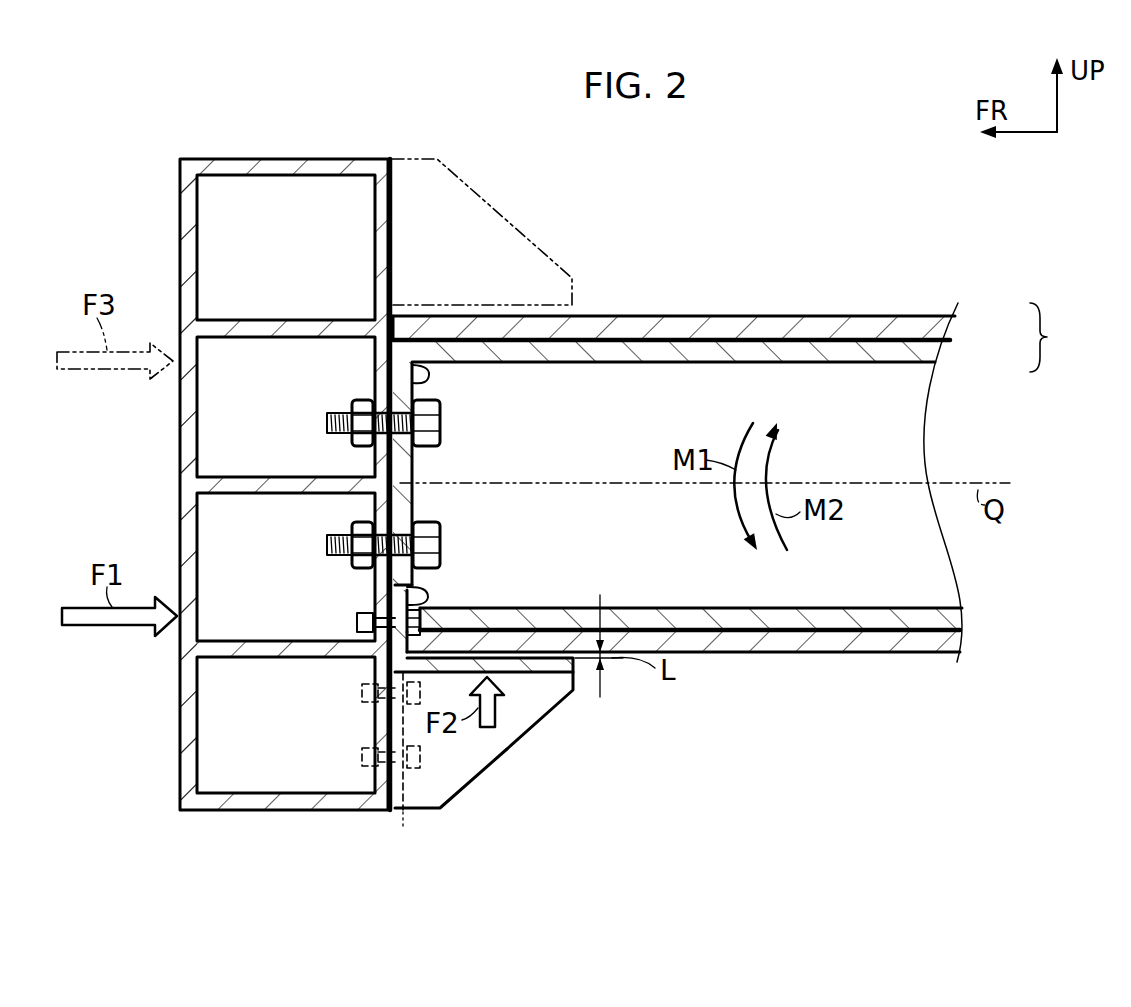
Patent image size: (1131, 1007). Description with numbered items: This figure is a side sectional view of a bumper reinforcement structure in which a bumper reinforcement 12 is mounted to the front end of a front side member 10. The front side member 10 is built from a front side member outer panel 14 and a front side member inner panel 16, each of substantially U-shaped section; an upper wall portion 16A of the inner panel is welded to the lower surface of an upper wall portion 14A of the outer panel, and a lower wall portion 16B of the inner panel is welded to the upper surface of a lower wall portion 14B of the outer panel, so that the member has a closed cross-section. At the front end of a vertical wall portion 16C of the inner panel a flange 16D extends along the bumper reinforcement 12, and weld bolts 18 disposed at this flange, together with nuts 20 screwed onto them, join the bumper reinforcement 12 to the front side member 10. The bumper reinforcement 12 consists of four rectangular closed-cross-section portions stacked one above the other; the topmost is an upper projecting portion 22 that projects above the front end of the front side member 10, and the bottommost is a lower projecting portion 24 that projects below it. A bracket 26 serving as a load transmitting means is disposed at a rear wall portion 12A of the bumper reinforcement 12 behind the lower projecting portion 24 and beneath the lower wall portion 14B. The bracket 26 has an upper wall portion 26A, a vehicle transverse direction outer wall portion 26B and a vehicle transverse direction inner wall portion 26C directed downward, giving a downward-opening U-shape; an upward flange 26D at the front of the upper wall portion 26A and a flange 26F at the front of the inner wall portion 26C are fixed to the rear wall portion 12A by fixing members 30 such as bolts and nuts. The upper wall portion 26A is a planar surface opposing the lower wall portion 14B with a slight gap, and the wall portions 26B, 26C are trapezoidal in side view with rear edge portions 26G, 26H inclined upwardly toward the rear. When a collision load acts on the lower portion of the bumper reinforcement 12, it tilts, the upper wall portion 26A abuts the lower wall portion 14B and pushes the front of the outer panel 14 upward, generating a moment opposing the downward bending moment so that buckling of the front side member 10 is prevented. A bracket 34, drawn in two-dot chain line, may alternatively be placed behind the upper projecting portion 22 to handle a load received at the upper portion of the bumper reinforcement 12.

The front side member 10 is at (739, 479).
The bumper reinforcement 12 is at (307, 146).
The rear wall portion 12A is at (392, 236).
The front side member outer panel 14 is at (713, 479).
The upper wall portion 14A is at (820, 314).
The lower wall portion 14B is at (838, 654).
The front side member inner panel 16 is at (713, 439).
The upper wall portion 16A is at (827, 363).
The lower wall portion 16B is at (838, 608).
The vertical wall portion 16C is at (674, 337).
The flange 16D is at (414, 470).
The weld bolt 18 is at (441, 421).
The nut 20 is at (362, 400).
The upper projecting portion 22 is at (170, 253).
The lower projecting portion 24 is at (170, 757).
The bracket 26 is at (528, 717).
The upper wall portion 26A is at (532, 673).
The vehicle transverse direction outer wall portion 26B is at (466, 776).
The vehicle transverse direction inner wall portion 26C is at (498, 807).
The flange 26D is at (416, 601).
The flange 26F is at (408, 796).
The rear edge portion 26G is at (531, 731).
The rear edge portion 26H is at (595, 732).
The fixing member 30 is at (357, 620).
The bracket 34 is at (524, 230).